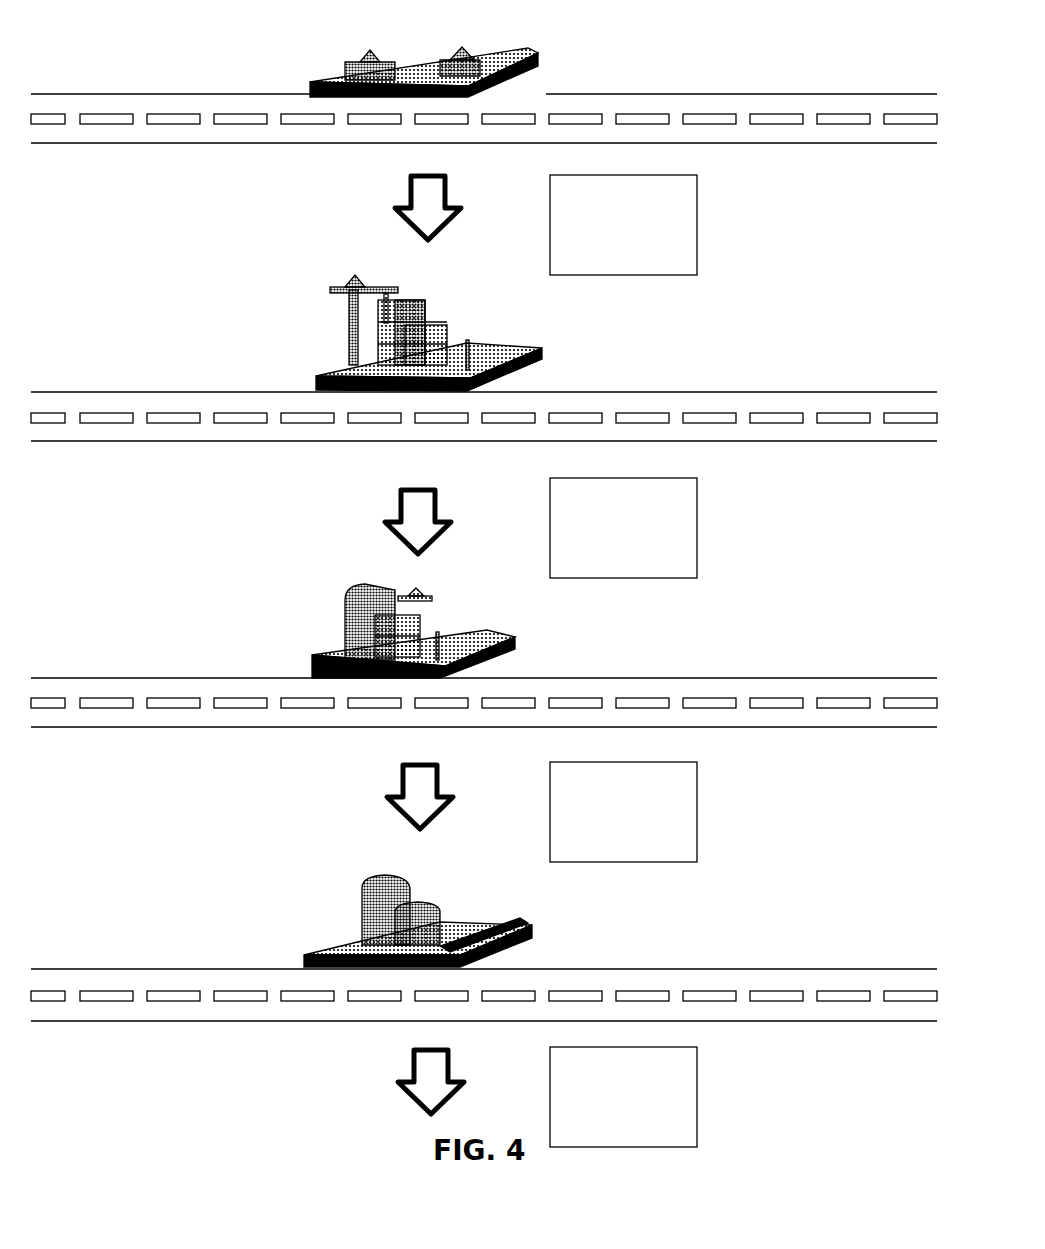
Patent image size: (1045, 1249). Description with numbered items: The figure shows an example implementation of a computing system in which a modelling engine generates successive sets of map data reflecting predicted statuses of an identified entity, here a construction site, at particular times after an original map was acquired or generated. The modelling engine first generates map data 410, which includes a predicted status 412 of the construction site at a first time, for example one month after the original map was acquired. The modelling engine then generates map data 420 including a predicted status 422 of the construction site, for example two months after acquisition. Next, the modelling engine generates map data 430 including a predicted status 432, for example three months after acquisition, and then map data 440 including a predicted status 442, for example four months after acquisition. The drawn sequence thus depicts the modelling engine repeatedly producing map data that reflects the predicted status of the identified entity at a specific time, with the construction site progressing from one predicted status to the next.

The map data 410 is at (852, 75).
The predicted status 412 is at (525, 50).
The map data 420 is at (836, 355).
The predicted status 422 is at (512, 352).
The map data 430 is at (840, 627).
The predicted status 432 is at (488, 635).
The map data 440 is at (827, 917).
The predicted status 442 is at (498, 923).